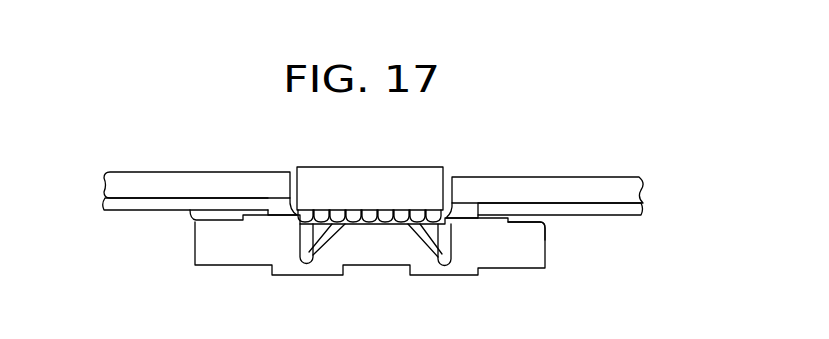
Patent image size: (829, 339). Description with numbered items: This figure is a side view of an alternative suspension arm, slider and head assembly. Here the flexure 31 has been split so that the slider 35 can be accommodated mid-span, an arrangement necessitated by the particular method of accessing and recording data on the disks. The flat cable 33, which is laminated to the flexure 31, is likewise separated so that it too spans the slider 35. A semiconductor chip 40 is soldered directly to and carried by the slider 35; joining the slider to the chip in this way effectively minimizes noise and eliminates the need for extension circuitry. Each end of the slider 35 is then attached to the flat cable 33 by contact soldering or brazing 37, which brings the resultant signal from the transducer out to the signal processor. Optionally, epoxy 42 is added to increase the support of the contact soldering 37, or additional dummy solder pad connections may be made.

The flexure 31 is at (127, 181).
The flat cable 33 is at (127, 204).
The slider 35 is at (225, 252).
The contact soldering 37 is at (498, 218).
The semiconductor chip 40 is at (384, 178).
The epoxy 42 is at (548, 224).